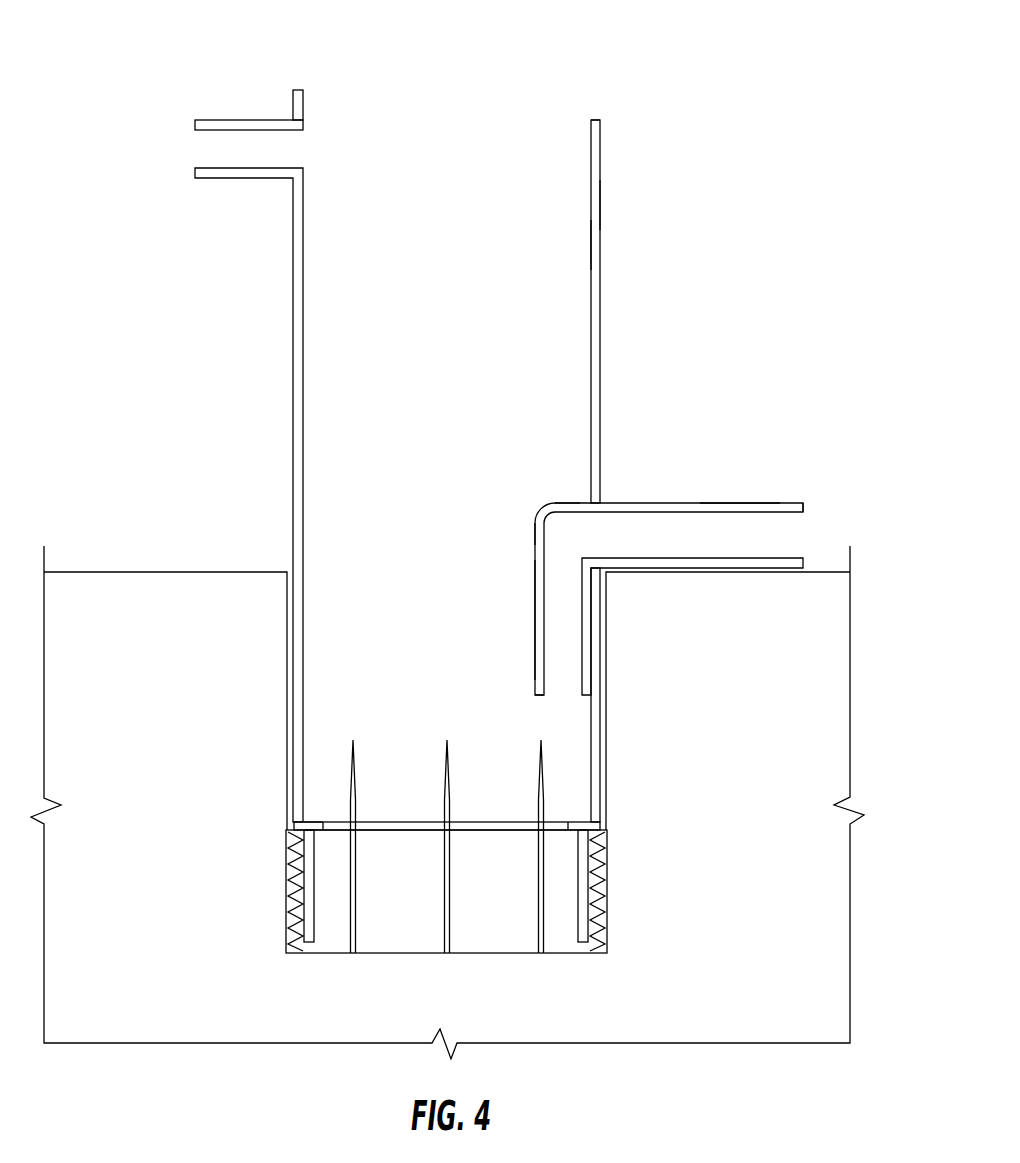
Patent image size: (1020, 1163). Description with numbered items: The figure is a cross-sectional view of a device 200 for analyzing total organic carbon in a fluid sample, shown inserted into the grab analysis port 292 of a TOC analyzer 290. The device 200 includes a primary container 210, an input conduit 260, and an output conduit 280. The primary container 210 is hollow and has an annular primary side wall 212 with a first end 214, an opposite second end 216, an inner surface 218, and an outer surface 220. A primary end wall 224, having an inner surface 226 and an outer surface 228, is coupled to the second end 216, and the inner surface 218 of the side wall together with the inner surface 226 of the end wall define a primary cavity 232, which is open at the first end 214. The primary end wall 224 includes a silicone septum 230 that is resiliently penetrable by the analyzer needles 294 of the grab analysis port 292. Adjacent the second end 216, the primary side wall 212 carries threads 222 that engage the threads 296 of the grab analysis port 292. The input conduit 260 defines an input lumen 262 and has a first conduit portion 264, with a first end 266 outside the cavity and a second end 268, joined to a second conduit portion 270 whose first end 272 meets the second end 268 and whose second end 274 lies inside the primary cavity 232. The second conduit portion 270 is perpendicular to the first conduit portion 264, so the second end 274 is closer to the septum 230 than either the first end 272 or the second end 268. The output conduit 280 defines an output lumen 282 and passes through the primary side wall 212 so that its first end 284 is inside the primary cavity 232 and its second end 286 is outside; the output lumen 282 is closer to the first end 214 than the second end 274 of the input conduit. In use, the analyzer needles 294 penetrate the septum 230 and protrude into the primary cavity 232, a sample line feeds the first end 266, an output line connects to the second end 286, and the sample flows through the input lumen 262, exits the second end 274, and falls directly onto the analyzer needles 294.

The device 200 is at (704, 117).
The primary container 210 is at (523, 428).
The primary side wall 212 is at (601, 328).
The first end 214 is at (597, 120).
The second end 216 is at (602, 823).
The inner surface 218 is at (590, 245).
The outer surface 220 is at (600, 205).
The threads 222 is at (612, 942).
The primary end wall 224 is at (306, 820).
The inner surface 226 is at (319, 816).
The outer surface 228 is at (298, 858).
The septum 230 is at (407, 820).
The primary cavity 232 is at (437, 198).
The input conduit 260 is at (654, 518).
The input lumen 262 is at (646, 537).
The first conduit portion 264 is at (723, 502).
The first end 266 is at (803, 508).
The second end 268 is at (560, 502).
The second conduit portion 270 is at (533, 618).
The first end 272 is at (535, 527).
The second end 274 is at (535, 695).
The output conduit 280 is at (246, 414).
The output lumen 282 is at (230, 152).
The first end 284 is at (303, 124).
The second end 286 is at (195, 124).
The TOC analyzer 290 is at (868, 892).
The grab analysis port 292 is at (445, 862).
The analyzer needles 294 is at (450, 790).
The threads 296 is at (604, 892).